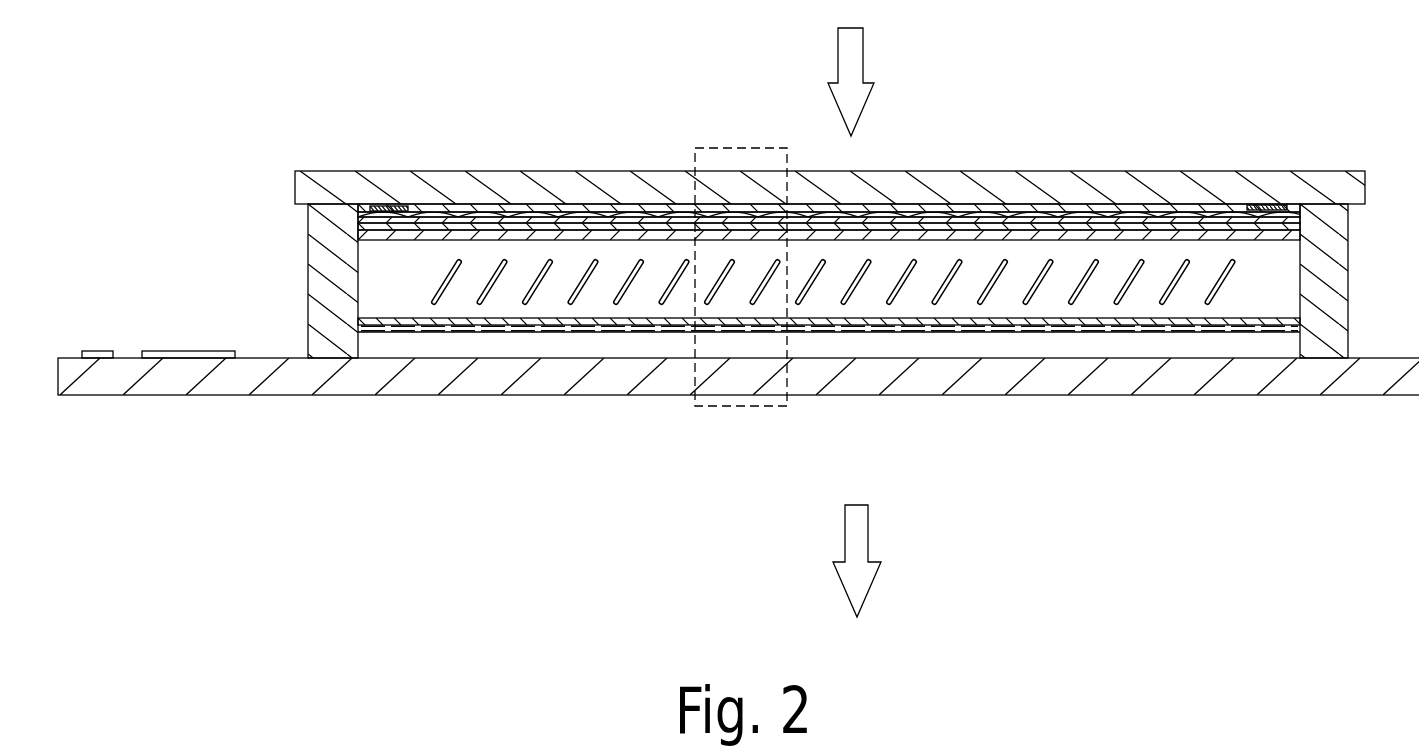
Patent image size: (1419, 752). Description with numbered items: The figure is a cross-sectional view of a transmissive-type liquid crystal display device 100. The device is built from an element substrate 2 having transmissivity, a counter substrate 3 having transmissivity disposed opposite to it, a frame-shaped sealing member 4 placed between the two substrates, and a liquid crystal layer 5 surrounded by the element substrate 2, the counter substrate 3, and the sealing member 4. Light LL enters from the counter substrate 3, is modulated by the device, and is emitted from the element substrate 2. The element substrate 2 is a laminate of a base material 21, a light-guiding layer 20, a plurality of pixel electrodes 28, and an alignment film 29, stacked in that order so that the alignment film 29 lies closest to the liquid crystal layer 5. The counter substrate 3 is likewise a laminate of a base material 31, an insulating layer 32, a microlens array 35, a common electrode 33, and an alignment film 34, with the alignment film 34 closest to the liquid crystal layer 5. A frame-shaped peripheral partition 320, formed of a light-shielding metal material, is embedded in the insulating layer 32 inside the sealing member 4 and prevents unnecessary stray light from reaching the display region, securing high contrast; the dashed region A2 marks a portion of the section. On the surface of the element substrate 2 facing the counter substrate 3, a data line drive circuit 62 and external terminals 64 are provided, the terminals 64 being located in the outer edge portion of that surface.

The liquid crystal display device 100 is at (1259, 120).
The element substrate 2 is at (1172, 396).
The counter substrate 3 is at (1140, 171).
The sealing member 4 is at (1326, 285).
The liquid crystal layer 5 is at (1267, 298).
The light-guiding layer 20 is at (530, 350).
The base material 21 is at (463, 385).
The pixel electrodes 28 is at (625, 333).
The alignment film 29 is at (414, 330).
The base material 31 is at (487, 190).
The insulating layer 32 is at (540, 211).
The peripheral partition 320 is at (405, 207).
The common electrode 33 is at (618, 228).
The alignment film 34 is at (660, 237).
The microlens array 35 is at (583, 219).
The data line drive circuit 62 is at (200, 350).
The external terminals 64 is at (103, 350).
The region A2 is at (741, 299).
The light LL is at (865, 52).